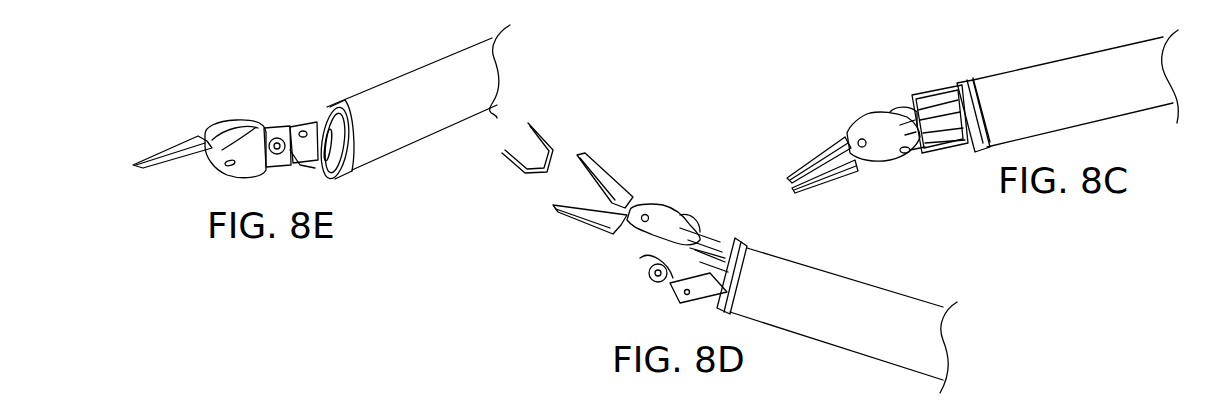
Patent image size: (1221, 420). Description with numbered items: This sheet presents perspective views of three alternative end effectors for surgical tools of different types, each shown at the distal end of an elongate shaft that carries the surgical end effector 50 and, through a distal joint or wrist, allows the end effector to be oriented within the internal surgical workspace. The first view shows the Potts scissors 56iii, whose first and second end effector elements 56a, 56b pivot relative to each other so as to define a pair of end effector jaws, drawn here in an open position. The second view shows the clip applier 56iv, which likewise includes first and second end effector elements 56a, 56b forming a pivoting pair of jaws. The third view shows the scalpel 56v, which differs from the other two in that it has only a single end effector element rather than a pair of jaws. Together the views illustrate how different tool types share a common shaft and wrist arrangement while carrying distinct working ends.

In FIG. 8E, the surgical end effector 50 is at (425, 85).
In FIG. 8D, the surgical end effector 50 is at (868, 298).
In FIG. 8C, the surgical end effector 50 is at (1062, 68).
In FIG. 8D, the first end effector element 56a is at (603, 170).
In FIG. 8C, the first end effector element 56a is at (831, 147).
In FIG. 8D, the second end effector element 56b is at (583, 228).
In FIG. 8C, the second end effector element 56b is at (827, 188).
In FIG. 8C, the Potts scissors 56iii is at (790, 160).
In FIG. 8D, the clip applier 56iv is at (555, 190).
In FIG. 8E, the scalpel 56v is at (129, 163).